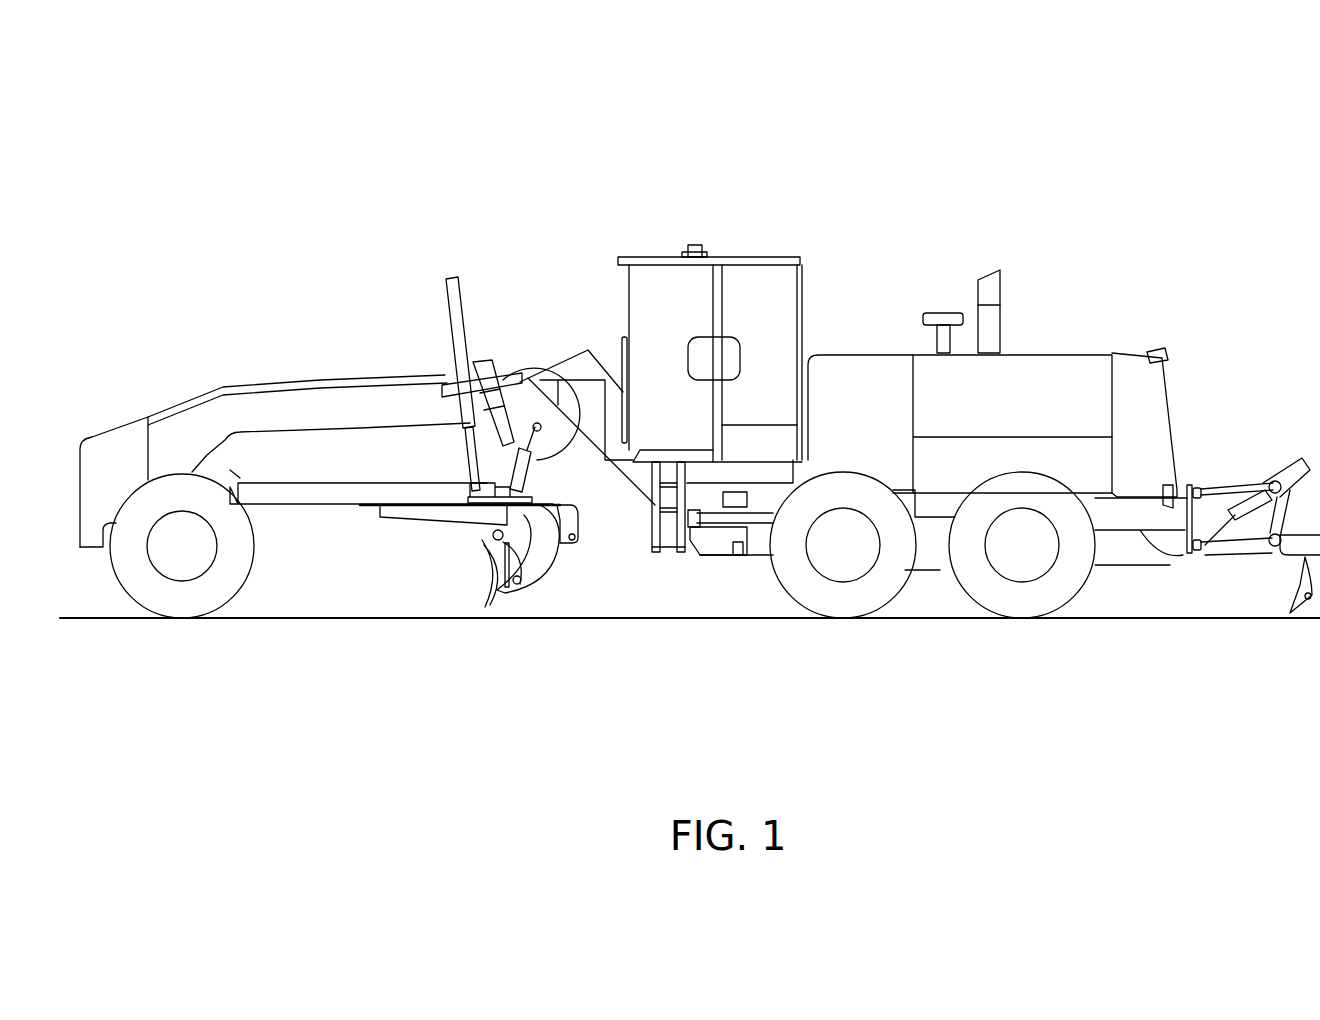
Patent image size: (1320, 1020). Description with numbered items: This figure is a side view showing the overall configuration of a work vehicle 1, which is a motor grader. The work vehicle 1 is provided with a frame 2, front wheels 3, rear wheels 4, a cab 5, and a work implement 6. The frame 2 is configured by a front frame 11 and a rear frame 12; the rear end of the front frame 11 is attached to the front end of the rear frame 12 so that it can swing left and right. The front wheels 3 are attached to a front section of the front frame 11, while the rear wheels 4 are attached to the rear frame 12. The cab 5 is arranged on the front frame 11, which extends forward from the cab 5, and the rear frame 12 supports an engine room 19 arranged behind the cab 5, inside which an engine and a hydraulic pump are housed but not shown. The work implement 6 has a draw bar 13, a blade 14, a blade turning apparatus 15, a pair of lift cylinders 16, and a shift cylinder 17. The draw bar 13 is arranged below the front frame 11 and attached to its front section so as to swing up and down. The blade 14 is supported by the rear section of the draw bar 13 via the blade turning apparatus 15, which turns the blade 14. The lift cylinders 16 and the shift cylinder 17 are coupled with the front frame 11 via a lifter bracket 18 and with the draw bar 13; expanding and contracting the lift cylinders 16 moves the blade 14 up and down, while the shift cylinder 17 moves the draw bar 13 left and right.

The work vehicle 1 is at (545, 150).
The frame 2 is at (705, 565).
The front wheels 3 is at (183, 606).
The rear wheels 4 is at (843, 606).
The cab 5 is at (763, 272).
The work implement 6 is at (378, 532).
The front frame 11 is at (318, 385).
The rear frame 12 is at (933, 560).
The draw bar 13 is at (283, 490).
The blade 14 is at (492, 573).
The blade turning apparatus 15 is at (410, 510).
The lift cylinders 16 is at (443, 285).
The shift cylinder 17 is at (571, 418).
The lifter bracket 18 is at (480, 360).
The engine room 19 is at (1044, 378).